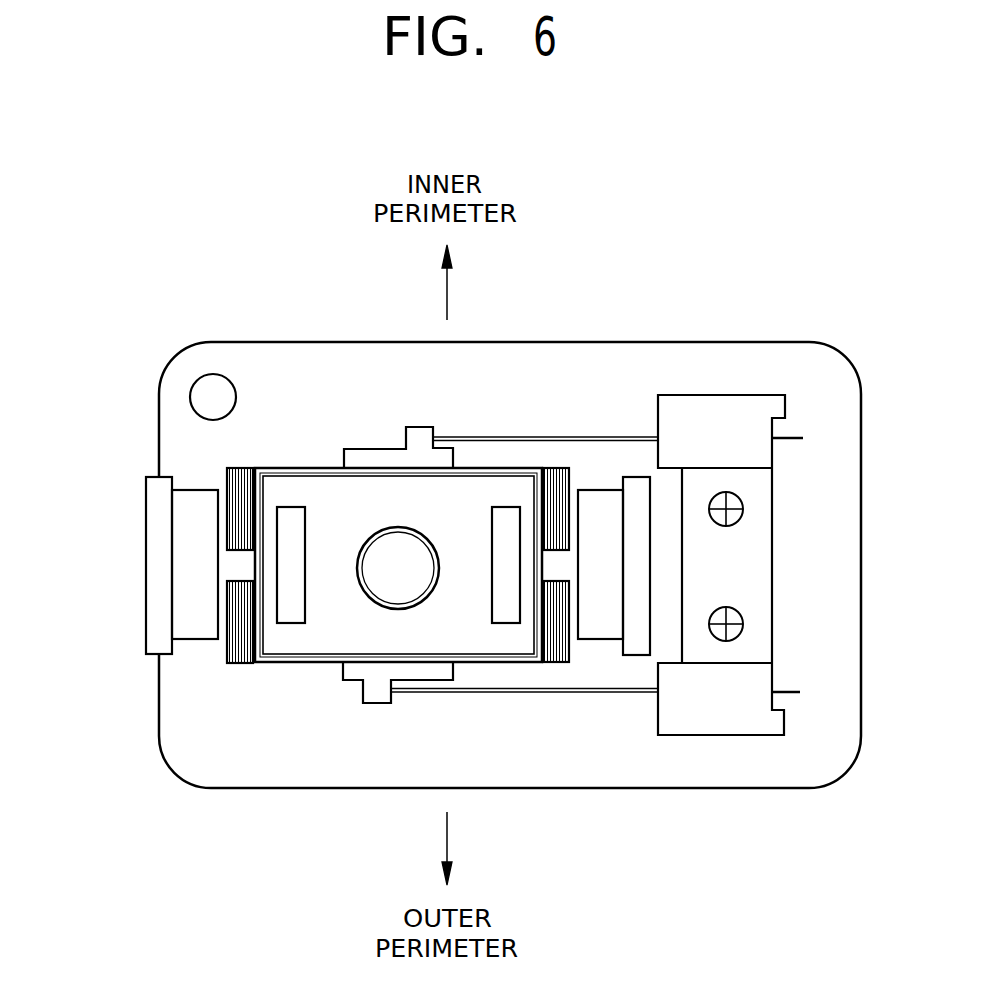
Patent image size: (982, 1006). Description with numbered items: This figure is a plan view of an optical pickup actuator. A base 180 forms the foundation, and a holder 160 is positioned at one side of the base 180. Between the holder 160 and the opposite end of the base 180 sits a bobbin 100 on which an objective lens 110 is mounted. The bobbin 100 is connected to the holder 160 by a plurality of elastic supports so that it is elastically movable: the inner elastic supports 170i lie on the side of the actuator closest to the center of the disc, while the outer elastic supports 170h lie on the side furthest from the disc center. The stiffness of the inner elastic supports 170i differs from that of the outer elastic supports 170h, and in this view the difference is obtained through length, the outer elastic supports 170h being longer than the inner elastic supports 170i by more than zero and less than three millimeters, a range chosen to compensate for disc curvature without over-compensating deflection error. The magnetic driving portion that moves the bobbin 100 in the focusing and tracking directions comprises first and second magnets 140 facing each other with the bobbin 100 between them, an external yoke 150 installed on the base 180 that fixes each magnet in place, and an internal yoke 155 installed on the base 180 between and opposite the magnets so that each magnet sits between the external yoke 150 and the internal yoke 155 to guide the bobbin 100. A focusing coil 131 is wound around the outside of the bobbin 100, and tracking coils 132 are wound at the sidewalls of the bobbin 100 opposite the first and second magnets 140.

The bobbin 100 is at (312, 490).
The objective lens 110 is at (389, 547).
The focusing coil 131 is at (296, 658).
The tracking coils 132 is at (560, 515).
The first and second magnets 140 is at (193, 617).
The external yoke 150 is at (155, 568).
The internal yoke 155 is at (287, 507).
The holder 160 is at (728, 723).
The inner elastic supports 170i is at (566, 440).
The outer elastic supports 170h is at (530, 693).
The base 180 is at (222, 772).